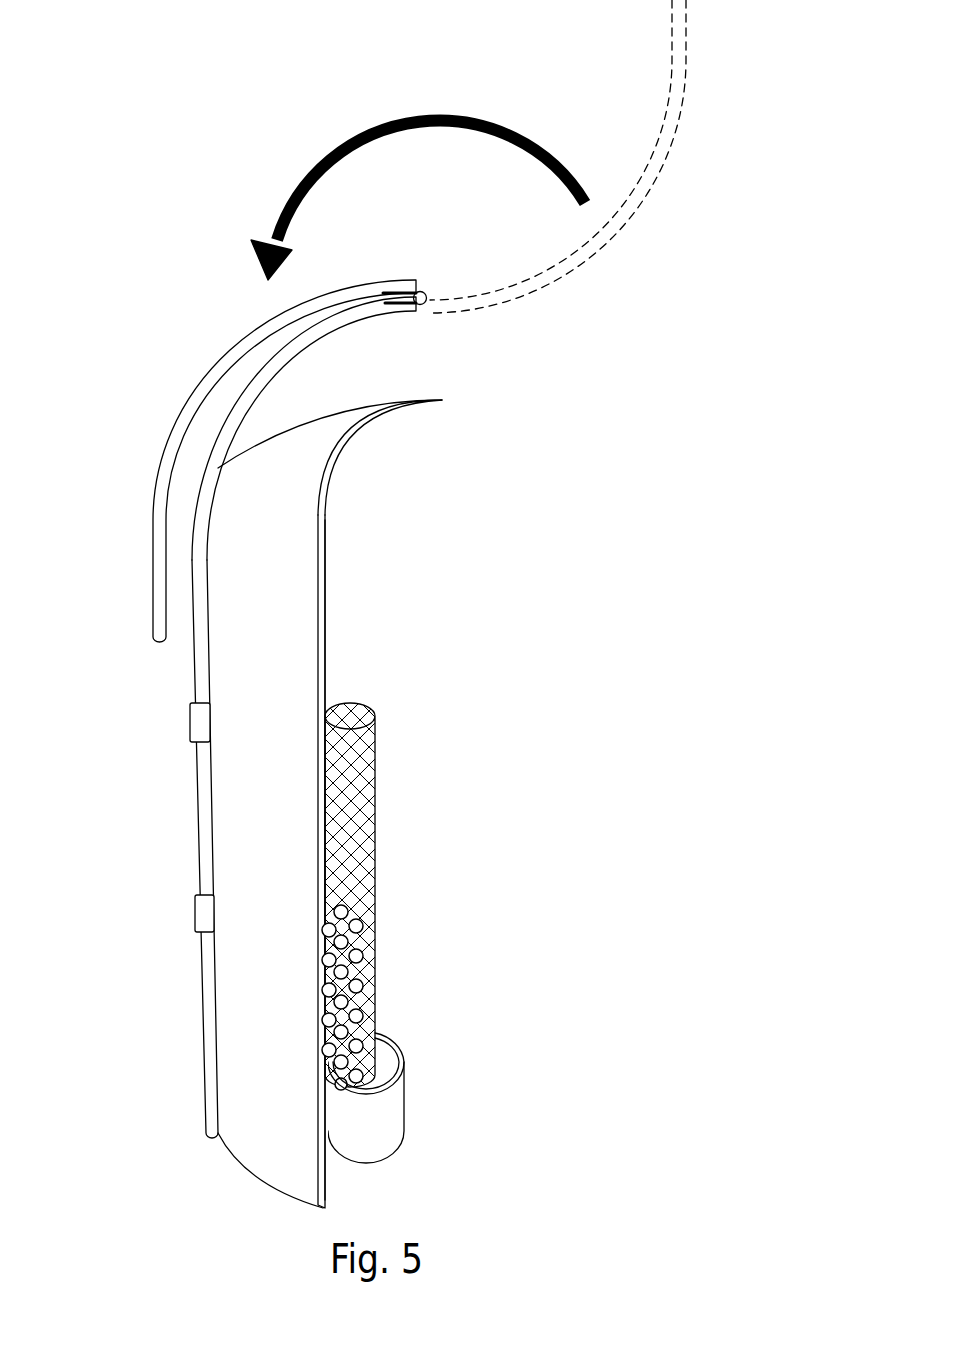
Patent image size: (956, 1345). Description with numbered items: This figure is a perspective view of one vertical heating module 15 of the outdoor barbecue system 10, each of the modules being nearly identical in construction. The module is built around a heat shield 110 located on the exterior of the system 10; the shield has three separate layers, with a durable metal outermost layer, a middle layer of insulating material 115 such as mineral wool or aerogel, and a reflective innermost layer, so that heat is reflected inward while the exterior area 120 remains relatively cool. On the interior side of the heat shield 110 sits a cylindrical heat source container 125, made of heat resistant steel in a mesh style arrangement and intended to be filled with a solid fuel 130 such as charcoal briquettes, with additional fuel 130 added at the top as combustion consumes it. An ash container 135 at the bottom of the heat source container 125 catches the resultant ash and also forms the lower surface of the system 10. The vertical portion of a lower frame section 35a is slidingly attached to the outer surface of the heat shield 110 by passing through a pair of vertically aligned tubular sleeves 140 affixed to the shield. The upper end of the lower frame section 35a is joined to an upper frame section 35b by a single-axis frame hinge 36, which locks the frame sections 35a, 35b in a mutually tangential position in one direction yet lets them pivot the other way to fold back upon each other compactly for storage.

The system 10 is at (172, 1124).
The vertical heating module 15 is at (215, 826).
The lower frame section 35a is at (345, 327).
The upper frame section 35b is at (193, 403).
The frame hinge 36 is at (426, 293).
The heat shield 110 is at (235, 558).
The insulating material 115 is at (327, 657).
The exterior area 120 is at (134, 737).
The heat source container 125 is at (373, 860).
The solid fuel 130 is at (375, 990).
The ash container 135 is at (404, 1097).
The tubular sleeve 140 is at (200, 733).